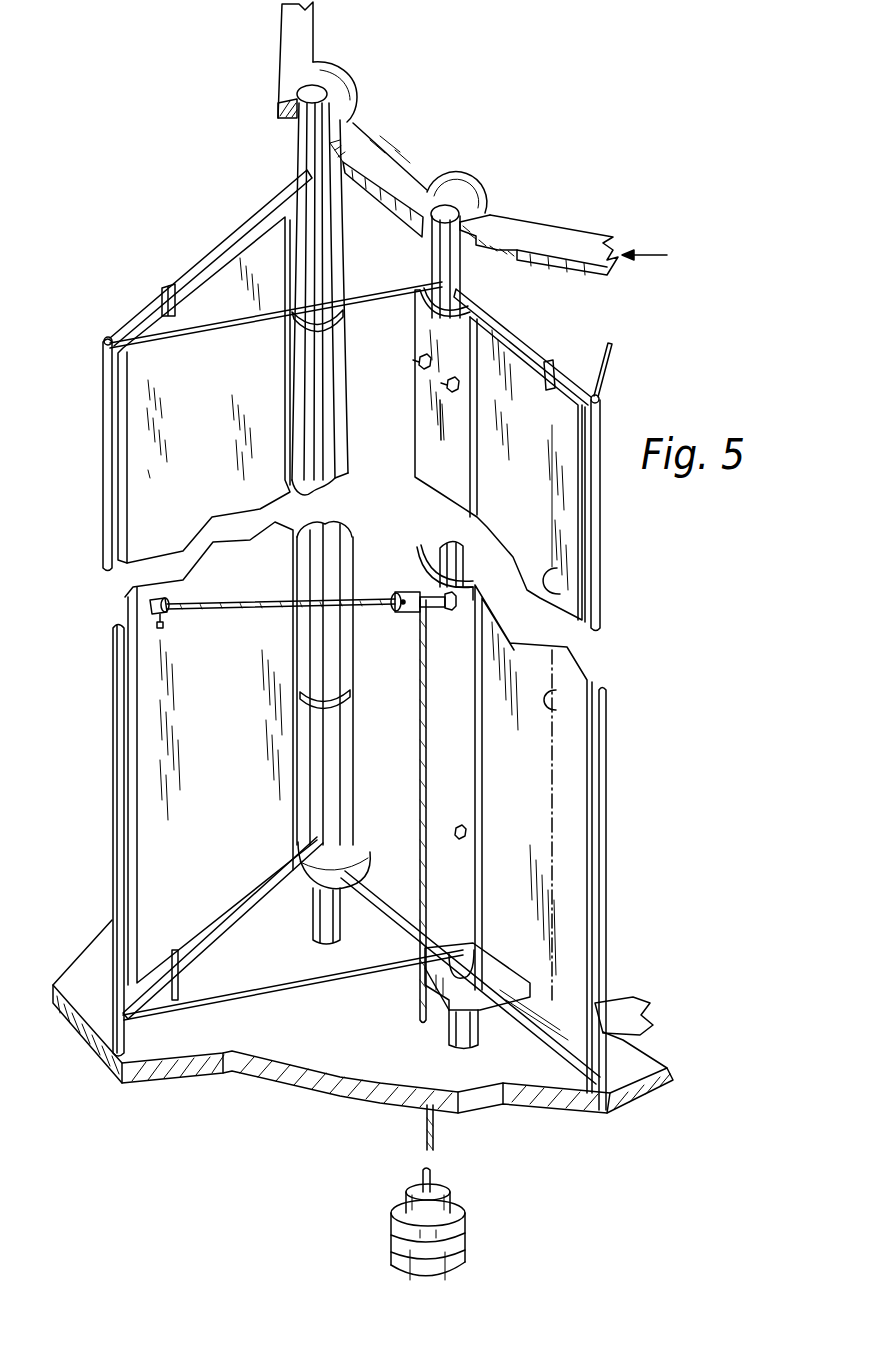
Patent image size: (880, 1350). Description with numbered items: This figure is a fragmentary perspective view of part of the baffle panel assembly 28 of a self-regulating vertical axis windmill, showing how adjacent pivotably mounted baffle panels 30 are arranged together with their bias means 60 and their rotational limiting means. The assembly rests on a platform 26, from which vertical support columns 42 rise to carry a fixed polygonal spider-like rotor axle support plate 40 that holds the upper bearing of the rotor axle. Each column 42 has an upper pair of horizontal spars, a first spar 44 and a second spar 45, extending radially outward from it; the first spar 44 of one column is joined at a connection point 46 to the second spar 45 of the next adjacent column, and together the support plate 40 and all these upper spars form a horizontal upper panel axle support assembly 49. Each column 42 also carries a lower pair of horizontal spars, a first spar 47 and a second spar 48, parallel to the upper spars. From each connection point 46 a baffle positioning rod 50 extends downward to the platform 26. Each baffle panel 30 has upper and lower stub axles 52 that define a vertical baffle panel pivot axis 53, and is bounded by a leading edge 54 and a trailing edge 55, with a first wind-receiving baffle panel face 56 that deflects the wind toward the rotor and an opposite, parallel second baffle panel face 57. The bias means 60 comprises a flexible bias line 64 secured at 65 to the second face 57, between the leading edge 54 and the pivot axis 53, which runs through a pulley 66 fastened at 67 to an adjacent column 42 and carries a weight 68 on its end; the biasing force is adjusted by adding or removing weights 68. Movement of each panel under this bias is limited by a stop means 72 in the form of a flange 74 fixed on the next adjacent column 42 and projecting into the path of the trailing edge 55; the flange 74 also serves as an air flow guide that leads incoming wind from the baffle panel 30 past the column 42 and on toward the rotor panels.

The platform 26 is at (282, 1052).
The baffle panel assembly 28 is at (588, 509).
The baffle panel 30 is at (142, 421).
The rotor axle support plate 40 is at (560, 236).
The vertical support column 42 is at (442, 236).
The first spar 44 is at (303, 182).
The second spar 45 is at (186, 330).
The connection point 46 is at (105, 338).
The first spar 47 is at (228, 915).
The second spar 48 is at (292, 988).
The upper panel axle support assembly 49 is at (662, 253).
The baffle positioning rod 50 is at (114, 860).
The stub axle 52 is at (168, 290).
The baffle panel pivot axis 53 is at (548, 702).
The leading edge 54 is at (125, 520).
The trailing edge 55 is at (290, 441).
The first wind-receiving baffle panel face 56 is at (545, 598).
The second baffle panel face 57 is at (150, 473).
The bias means 60 is at (436, 1134).
The flexible bias line 64 is at (427, 772).
The securement point 65 is at (160, 626).
The pulley 66 is at (405, 612).
The pulley attachment point 67 is at (470, 589).
The weight 68 is at (420, 1270).
The stop means 72 is at (456, 447).
The flange 74 is at (465, 408).